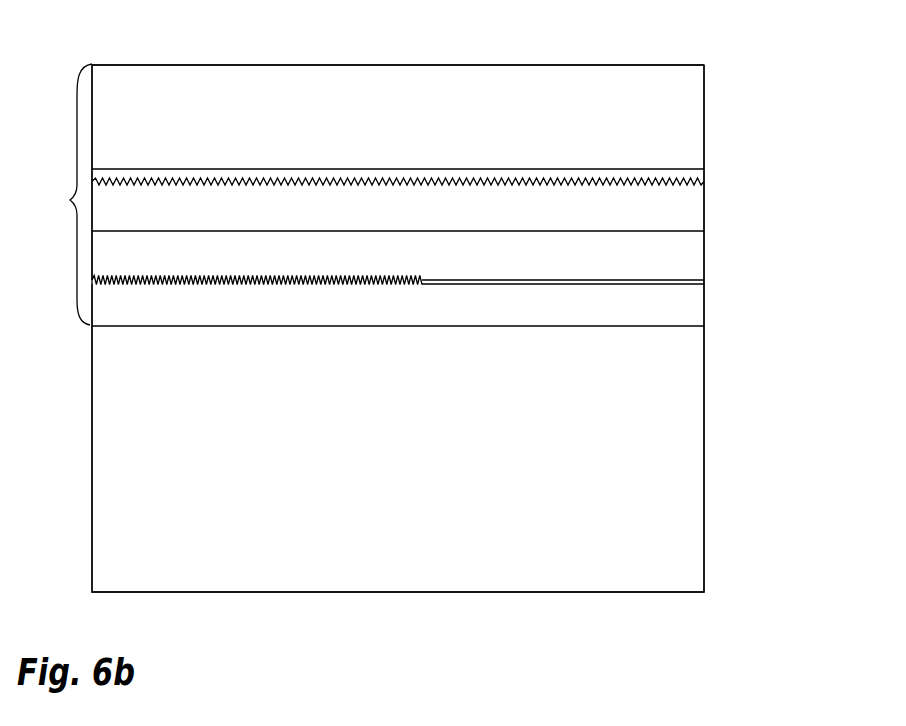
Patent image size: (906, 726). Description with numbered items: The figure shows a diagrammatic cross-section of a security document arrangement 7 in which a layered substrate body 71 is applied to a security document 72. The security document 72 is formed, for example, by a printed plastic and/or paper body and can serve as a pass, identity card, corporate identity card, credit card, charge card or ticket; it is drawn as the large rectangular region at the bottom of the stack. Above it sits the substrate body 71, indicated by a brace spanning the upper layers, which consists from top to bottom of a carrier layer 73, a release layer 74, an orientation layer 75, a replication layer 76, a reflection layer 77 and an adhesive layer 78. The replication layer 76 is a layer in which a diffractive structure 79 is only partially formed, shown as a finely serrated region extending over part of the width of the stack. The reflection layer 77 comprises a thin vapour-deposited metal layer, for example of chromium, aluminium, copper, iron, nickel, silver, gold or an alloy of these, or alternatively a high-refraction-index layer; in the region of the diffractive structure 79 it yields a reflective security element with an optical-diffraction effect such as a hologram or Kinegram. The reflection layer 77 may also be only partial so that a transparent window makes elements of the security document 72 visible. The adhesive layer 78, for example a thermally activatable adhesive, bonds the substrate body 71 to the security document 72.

The magnetic recording medium 7 is at (718, 66).
The substrate body 71 is at (63, 194).
The security document 72 is at (117, 446).
The carrier layer 73 is at (698, 100).
The release layer 74 is at (704, 173).
The orientation layer 75 is at (698, 205).
The replication layer 76 is at (698, 247).
The reflection layer 77 is at (698, 283).
The adhesive layer 78 is at (698, 313).
The diffractive structure 79 is at (305, 282).